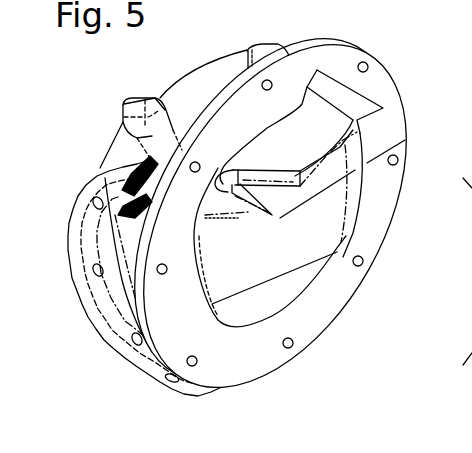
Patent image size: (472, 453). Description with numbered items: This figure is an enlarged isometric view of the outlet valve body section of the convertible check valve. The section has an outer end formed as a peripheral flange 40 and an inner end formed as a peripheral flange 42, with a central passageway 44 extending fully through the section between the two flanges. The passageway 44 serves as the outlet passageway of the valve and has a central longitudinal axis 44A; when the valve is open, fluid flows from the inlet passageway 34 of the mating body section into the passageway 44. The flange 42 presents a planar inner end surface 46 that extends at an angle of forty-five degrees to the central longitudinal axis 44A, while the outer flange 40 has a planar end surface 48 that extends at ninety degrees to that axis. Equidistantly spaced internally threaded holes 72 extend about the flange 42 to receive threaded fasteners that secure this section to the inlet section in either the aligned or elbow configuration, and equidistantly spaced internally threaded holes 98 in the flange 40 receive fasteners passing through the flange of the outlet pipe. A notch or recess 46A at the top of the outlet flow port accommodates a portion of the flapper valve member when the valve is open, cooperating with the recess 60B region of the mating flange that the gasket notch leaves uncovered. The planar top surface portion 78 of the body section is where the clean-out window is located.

The peripheral flange 40 is at (123, 353).
The peripheral flange 42 is at (226, 88).
The central passageway 44 is at (281, 289).
The central longitudinal axis 44A is at (313, 197).
The planar inner end surface 46 is at (333, 288).
The notch or recess 46A is at (351, 100).
The planar end surface 48 is at (85, 314).
The internally threaded holes 72 is at (196, 365).
The planar top surface portion 78 is at (138, 100).
The internally threaded holes 98 is at (96, 196).
The passageway 34 is at (463, 172).
The recess 60B is at (456, 372).